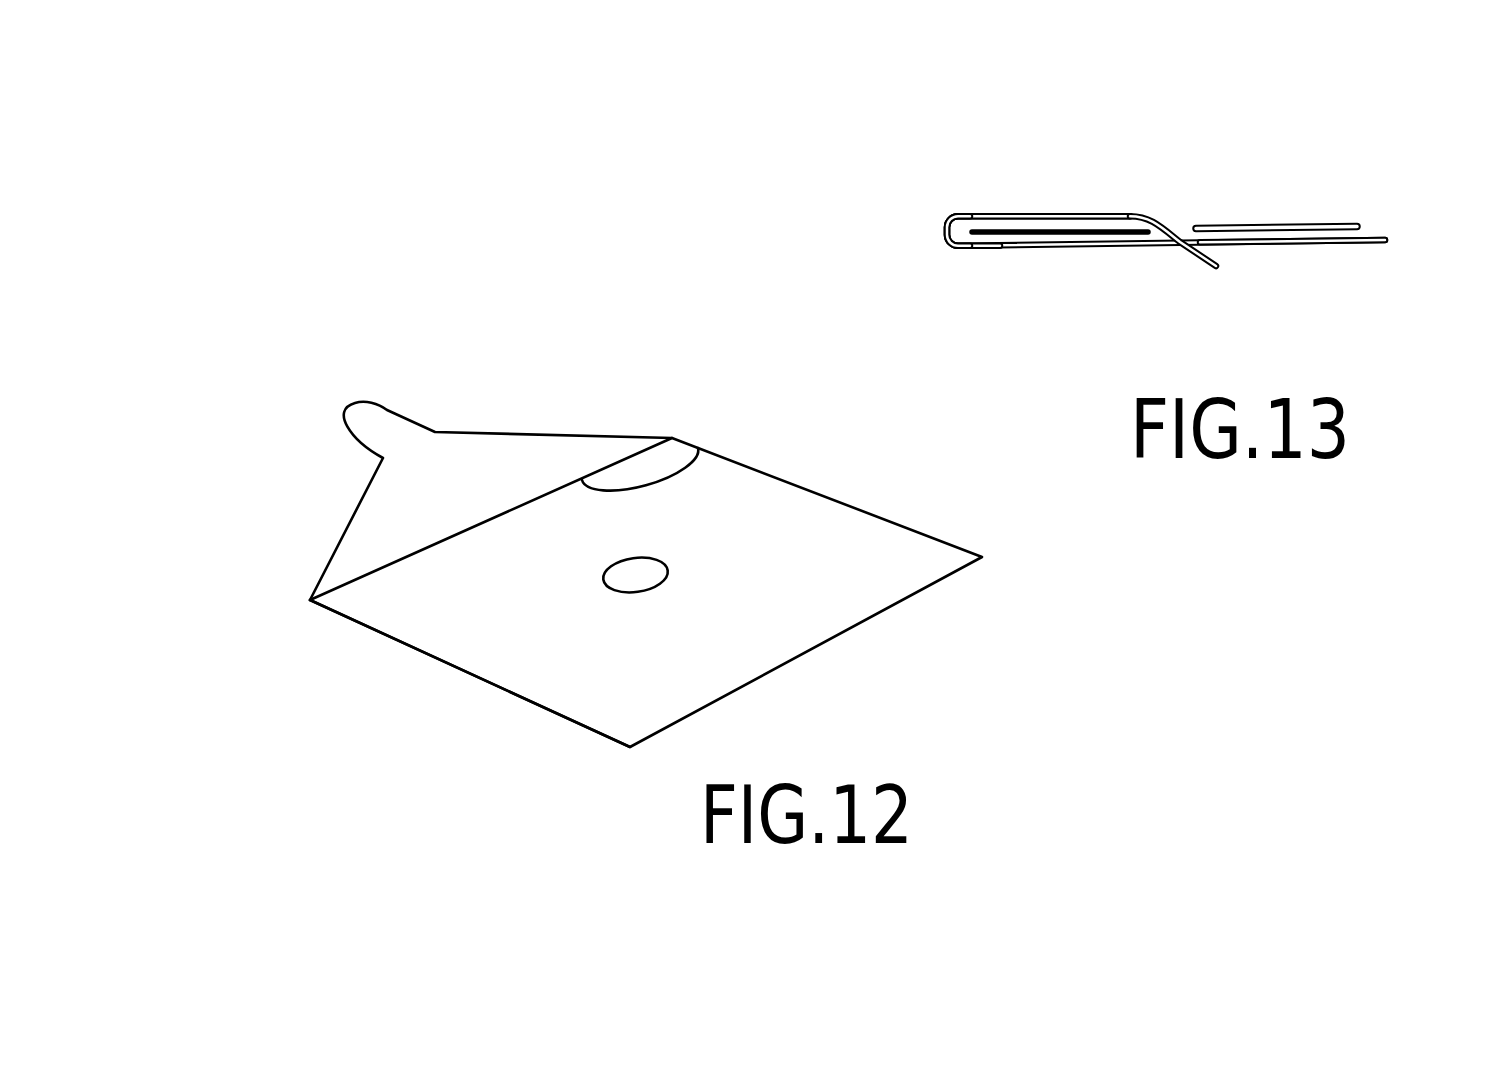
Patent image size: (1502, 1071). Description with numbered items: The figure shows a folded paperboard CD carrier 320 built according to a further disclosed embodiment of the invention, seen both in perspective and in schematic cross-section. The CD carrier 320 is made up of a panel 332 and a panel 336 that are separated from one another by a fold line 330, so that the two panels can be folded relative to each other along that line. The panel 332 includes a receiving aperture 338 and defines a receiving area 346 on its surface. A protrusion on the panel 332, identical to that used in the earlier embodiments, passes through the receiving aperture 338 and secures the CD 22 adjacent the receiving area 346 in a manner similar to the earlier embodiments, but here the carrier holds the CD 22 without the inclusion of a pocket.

In FIG. 13, the CD 22 is at (1048, 228).
In FIG. 12, the CD carrier 320 is at (504, 278).
In FIG. 13, the CD carrier 320 is at (1337, 152).
In FIG. 12, the fold line 330 is at (640, 483).
In FIG. 13, the fold line 330 is at (949, 248).
In FIG. 12, the panel 332 is at (445, 663).
In FIG. 13, the panel 332 is at (1274, 248).
In FIG. 12, the panel 336 is at (350, 520).
In FIG. 13, the panel 336 is at (1071, 213).
In FIG. 12, the receiving aperture 338 is at (668, 572).
In FIG. 13, the receiving aperture 338 is at (1164, 247).
In FIG. 12, the receiving area 346 is at (757, 577).
In FIG. 13, the receiving area 346 is at (1373, 236).